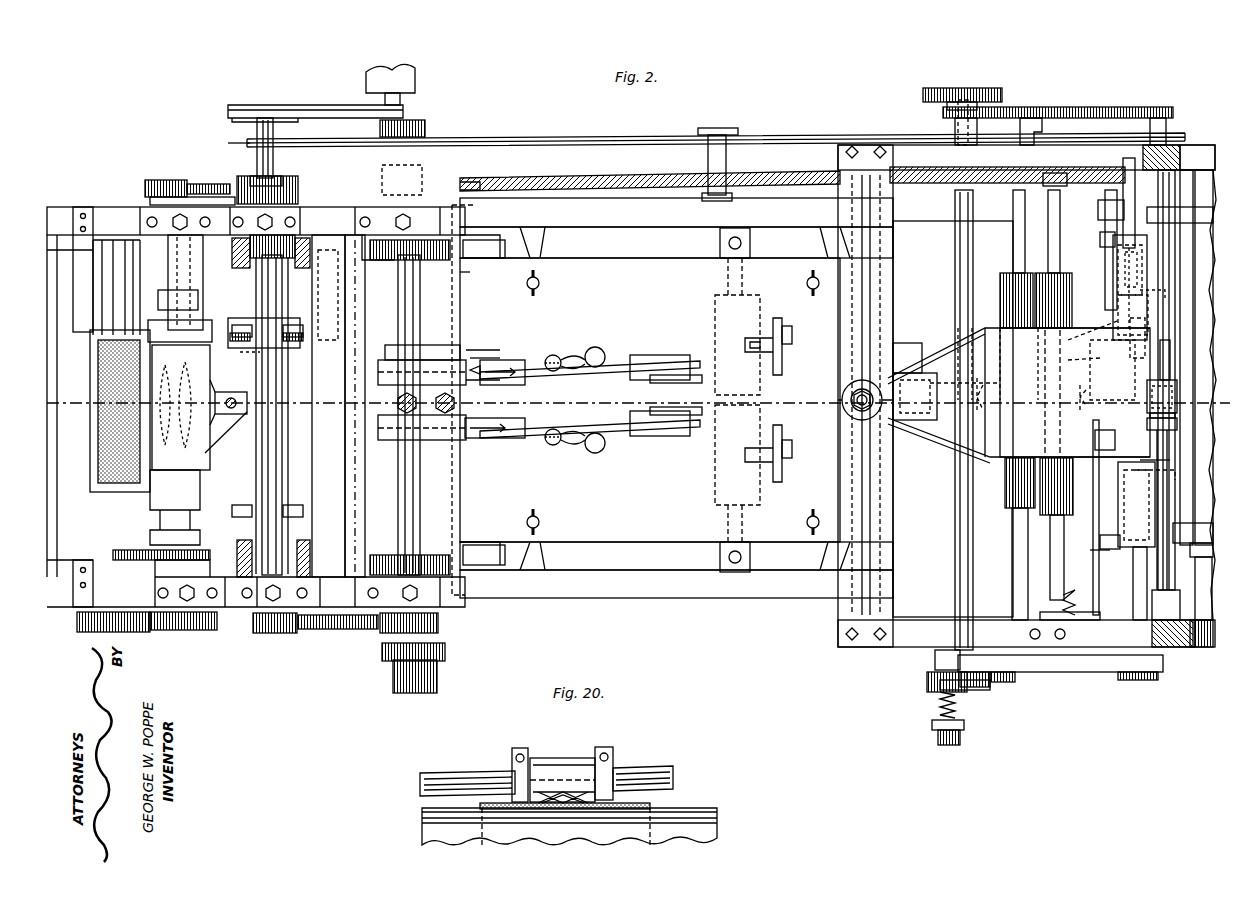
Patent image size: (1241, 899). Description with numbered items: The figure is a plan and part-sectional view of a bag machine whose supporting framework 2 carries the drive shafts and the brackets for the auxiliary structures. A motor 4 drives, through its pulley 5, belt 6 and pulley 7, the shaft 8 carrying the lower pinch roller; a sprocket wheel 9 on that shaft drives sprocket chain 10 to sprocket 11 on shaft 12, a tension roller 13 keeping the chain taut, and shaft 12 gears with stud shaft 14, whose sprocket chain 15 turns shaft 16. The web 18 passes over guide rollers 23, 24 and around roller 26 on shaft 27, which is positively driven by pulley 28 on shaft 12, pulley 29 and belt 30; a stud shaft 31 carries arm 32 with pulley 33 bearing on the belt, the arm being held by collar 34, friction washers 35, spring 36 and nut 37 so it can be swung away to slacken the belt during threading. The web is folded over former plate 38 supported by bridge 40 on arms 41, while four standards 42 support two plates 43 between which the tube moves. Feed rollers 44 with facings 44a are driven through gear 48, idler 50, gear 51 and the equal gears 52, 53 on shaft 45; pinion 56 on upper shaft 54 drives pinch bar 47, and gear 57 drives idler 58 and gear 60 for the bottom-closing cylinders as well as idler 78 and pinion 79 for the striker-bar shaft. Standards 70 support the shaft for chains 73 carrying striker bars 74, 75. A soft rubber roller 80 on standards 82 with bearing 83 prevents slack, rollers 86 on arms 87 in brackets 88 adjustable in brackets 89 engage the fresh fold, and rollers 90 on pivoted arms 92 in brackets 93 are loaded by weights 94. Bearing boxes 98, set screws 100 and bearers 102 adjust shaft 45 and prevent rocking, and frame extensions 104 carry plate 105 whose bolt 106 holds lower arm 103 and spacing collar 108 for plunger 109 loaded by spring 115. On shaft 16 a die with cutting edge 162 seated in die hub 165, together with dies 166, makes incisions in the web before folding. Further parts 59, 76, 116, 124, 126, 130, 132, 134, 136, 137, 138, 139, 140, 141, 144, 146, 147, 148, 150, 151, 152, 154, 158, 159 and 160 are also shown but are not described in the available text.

In FIG. 2, the supporting framework 2 is at (923, 215).
In FIG. 2, the motor 4 is at (416, 73).
In FIG. 2, the pulley 5 is at (402, 100).
In FIG. 2, the belt 6 is at (318, 104).
In FIG. 2, the pulley 7 is at (262, 104).
In FIG. 2, the shaft 8 is at (275, 150).
In FIG. 2, the sprocket wheel 9 is at (228, 143).
In FIG. 2, the sprocket chain 10 is at (622, 130).
In FIG. 2, the sprocket 11 is at (978, 128).
In FIG. 2, the shaft 12 is at (955, 275).
In FIG. 2, the tension roller 13 is at (722, 128).
In FIG. 2, the stud shaft 14 is at (975, 88).
In FIG. 2, the sprocket chain 15 is at (1015, 107).
In FIG. 2, the shaft 16 is at (1170, 120).
In FIG. 20, the shaft 16 is at (442, 773).
In FIG. 2, the web 18 is at (990, 458).
In FIG. 20, the web 18 is at (480, 803).
In FIG. 2, the guide roller 23 is at (1002, 282).
In FIG. 2, the guide roller 24 is at (1108, 270).
In FIG. 2, the roller 26 is at (1118, 310).
In FIG. 20, the roller 26 is at (710, 808).
In FIG. 2, the shaft 27 is at (1118, 207).
In FIG. 2, the pulley 28 is at (990, 688).
In FIG. 2, the pulley 29 is at (1128, 680).
In FIG. 2, the belt 30 is at (1078, 672).
In FIG. 2, the stud shaft 31 is at (950, 745).
In FIG. 2, the arm 32 is at (990, 692).
In FIG. 2, the pulley 33 is at (1020, 684).
In FIG. 2, the collar 34 is at (935, 665).
In FIG. 2, the friction washers 35 is at (927, 685).
In FIG. 2, the spring 36 is at (938, 705).
In FIG. 2, the nut 37 is at (932, 728).
In FIG. 2, the former plate 38 is at (918, 388).
In FIG. 2, the bridge 40 is at (836, 212).
In FIG. 2, the arms 41 is at (898, 145).
In FIG. 2, the standards 42 is at (548, 241).
In FIG. 2, the plates 43 is at (650, 400).
In FIG. 2, the feed rollers 44 is at (398, 345).
In FIG. 2, the facings 44a is at (412, 388).
In FIG. 2, the shaft 45 is at (398, 280).
In FIG. 2, the pinch bar 47 is at (245, 357).
In FIG. 2, the gear 48 is at (266, 634).
In FIG. 2, the idler 50 is at (320, 630).
In FIG. 2, the gear 51 is at (382, 634).
In FIG. 2, the gear 52 is at (460, 288).
In FIG. 2, the gear 53 is at (478, 272).
In FIG. 2, the upper shaft 54 is at (318, 205).
In FIG. 2, the pinion 56 is at (298, 252).
In FIG. 2, the gear 57 is at (299, 190).
In FIG. 2, the idler gear 58 is at (205, 196).
In FIG. 2, the plate 59 is at (324, 406).
In FIG. 2, the gear 60 is at (158, 178).
In FIG. 2, the standards 70 is at (300, 245).
In FIG. 2, the chains 73 is at (210, 345).
In FIG. 2, the striker bar 74 is at (306, 411).
In FIG. 2, the striker bar 75 is at (264, 332).
In FIG. 2, the plate 76 is at (344, 406).
In FIG. 2, the idler 78 is at (208, 182).
In FIG. 2, the pinion 79 is at (283, 178).
In FIG. 2, the soft rubber roller 80 is at (715, 297).
In FIG. 2, the standards 82 is at (718, 242).
In FIG. 2, the bearing 83 is at (732, 540).
In FIG. 2, the rollers 86 is at (672, 355).
In FIG. 2, the arms 87 is at (690, 372).
In FIG. 2, the brackets 88 is at (792, 338).
In FIG. 2, the bracket 89 is at (775, 318).
In FIG. 2, the rollers 90 is at (528, 358).
In FIG. 2, the pivoted arms 92 is at (548, 356).
In FIG. 2, the brackets 93 is at (595, 347).
In FIG. 2, the weights 94 is at (568, 358).
In FIG. 2, the bearing boxes 98 is at (370, 238).
In FIG. 2, the set screws 100 is at (424, 195).
In FIG. 2, the bearers 102 is at (426, 128).
In FIG. 2, the lower arm 103 is at (483, 358).
In FIG. 2, the vertical extensions 104 is at (548, 202).
In FIG. 2, the horizontal plate 105 is at (462, 219).
In FIG. 2, the bolt 106 is at (483, 365).
In FIG. 2, the spacing collar 108 is at (466, 403).
In FIG. 2, the plunger 109 is at (456, 333).
In FIG. 2, the spring 115 is at (452, 345).
In FIG. 2, the bracket 116 is at (508, 240).
In FIG. 2, the rod 124 is at (205, 453).
In FIG. 2, the block 126 is at (228, 400).
In FIG. 2, the bar 130 is at (452, 176).
In FIG. 2, the hatched bar 132 is at (542, 178).
In FIG. 2, the post 134 is at (1125, 158).
In FIG. 2, the block 136 is at (1092, 438).
In FIG. 2, the bracket 137 is at (1030, 145).
In FIG. 2, the member 138 is at (1170, 478).
In FIG. 2, the post 139 is at (1180, 330).
In FIG. 2, the post 140 is at (1200, 648).
In FIG. 2, the block 141 is at (1205, 145).
In FIG. 2, the member 144 is at (1165, 300).
In FIG. 2, the member 146 is at (1170, 466).
In FIG. 2, the plate 147 is at (1203, 530).
In FIG. 2, the member 148 is at (1081, 334).
In FIG. 2, the box 150 is at (1118, 252).
In FIG. 2, the member 151 is at (1118, 285).
In FIG. 2, the block 152 is at (1114, 236).
In FIG. 2, the member 154 is at (1180, 428).
In FIG. 2, the rod 158 is at (1105, 550).
In FIG. 2, the cylinder 159 is at (1043, 565).
In FIG. 2, the spring 160 is at (1062, 600).
In FIG. 2, the cutting edge 162 is at (1177, 385).
In FIG. 20, the cutting edge 162 is at (555, 800).
In FIG. 2, the die hub 165 is at (1177, 410).
In FIG. 20, the die hub 165 is at (568, 758).
In FIG. 20, the dies 166 is at (512, 758).